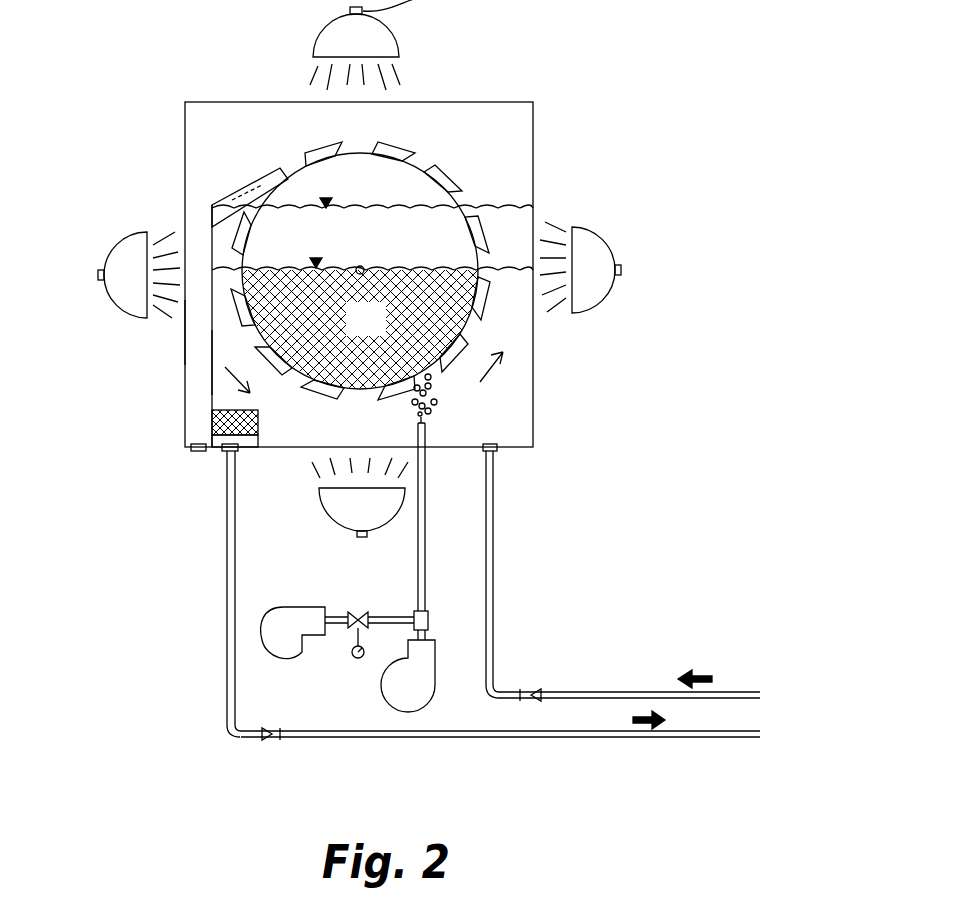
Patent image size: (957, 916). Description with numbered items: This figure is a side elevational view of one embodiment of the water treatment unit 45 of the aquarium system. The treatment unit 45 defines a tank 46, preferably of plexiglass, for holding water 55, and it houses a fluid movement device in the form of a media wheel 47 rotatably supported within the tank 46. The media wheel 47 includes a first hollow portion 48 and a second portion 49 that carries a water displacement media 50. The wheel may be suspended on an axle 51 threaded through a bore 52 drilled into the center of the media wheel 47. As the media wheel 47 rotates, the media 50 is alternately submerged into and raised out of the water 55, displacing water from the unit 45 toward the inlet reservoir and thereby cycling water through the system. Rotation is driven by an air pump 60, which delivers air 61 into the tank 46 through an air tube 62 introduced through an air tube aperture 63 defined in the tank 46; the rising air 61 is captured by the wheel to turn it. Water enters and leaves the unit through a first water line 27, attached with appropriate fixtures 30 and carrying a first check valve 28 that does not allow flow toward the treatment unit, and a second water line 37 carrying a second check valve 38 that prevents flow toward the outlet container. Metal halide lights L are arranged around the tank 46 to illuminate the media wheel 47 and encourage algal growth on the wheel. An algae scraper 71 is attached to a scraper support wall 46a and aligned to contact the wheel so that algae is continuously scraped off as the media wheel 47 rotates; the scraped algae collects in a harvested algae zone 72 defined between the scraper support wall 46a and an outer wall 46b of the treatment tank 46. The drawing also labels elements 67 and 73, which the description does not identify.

The metal halide lights L is at (122, 250).
The water treatment unit 45 is at (533, 152).
The treatment tank 46 is at (478, 150).
The scraper support wall 46a is at (212, 362).
The outer wall 46b is at (185, 332).
The algae scraper 71 is at (212, 205).
The media wheel 47 is at (458, 183).
The first hollow portion 48 is at (405, 198).
The second portion 49 is at (478, 307).
The water displacement media 50 is at (380, 333).
The axle 51 is at (362, 265).
The bore 52 is at (366, 270).
The water or fluid 55 is at (510, 428).
The air 61 is at (430, 405).
The air tube 62 is at (425, 528).
The air tube aperture 63 is at (425, 465).
The harvested algae zone 72 is at (212, 420).
The drain fitting 73 is at (195, 452).
The fixtures 30 is at (228, 452).
The first check valve 28 is at (263, 738).
The first water line 27 is at (525, 738).
The second water line 37 is at (625, 692).
The second check valve 38 is at (522, 690).
The air pump 60 is at (265, 650).
The valve 67 is at (354, 625).